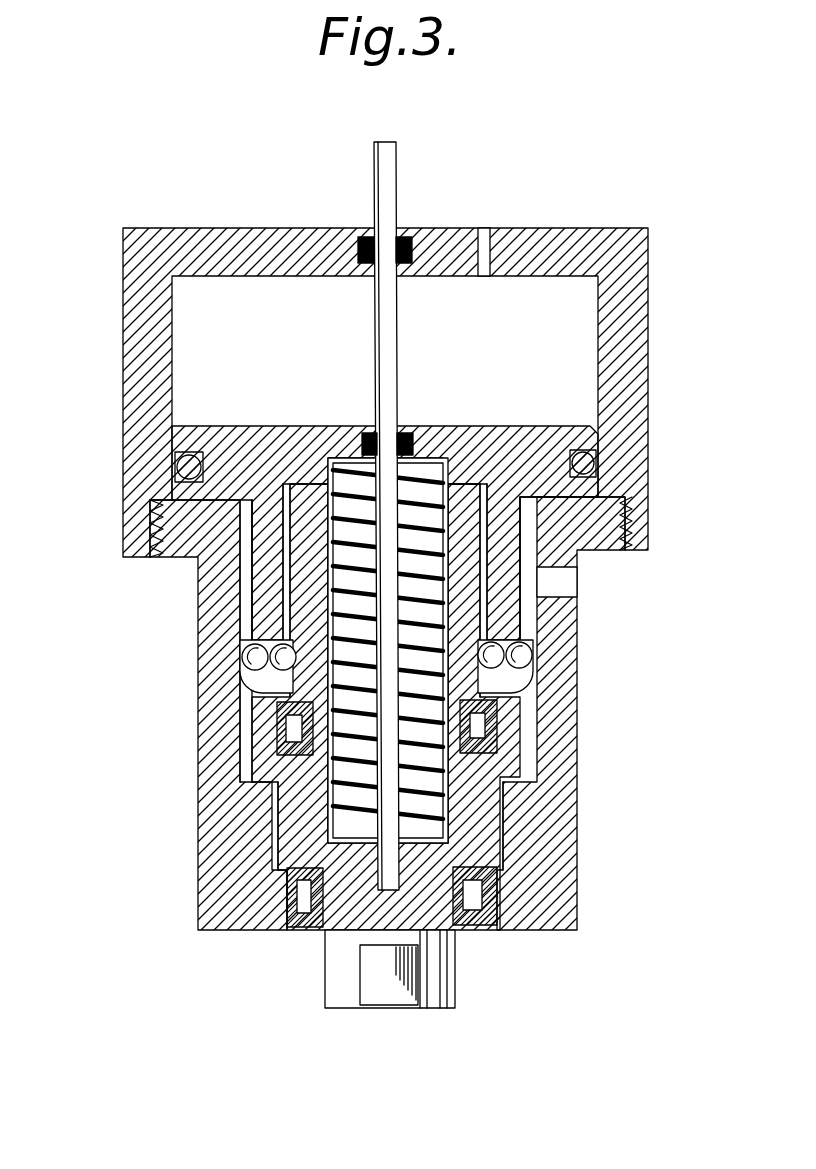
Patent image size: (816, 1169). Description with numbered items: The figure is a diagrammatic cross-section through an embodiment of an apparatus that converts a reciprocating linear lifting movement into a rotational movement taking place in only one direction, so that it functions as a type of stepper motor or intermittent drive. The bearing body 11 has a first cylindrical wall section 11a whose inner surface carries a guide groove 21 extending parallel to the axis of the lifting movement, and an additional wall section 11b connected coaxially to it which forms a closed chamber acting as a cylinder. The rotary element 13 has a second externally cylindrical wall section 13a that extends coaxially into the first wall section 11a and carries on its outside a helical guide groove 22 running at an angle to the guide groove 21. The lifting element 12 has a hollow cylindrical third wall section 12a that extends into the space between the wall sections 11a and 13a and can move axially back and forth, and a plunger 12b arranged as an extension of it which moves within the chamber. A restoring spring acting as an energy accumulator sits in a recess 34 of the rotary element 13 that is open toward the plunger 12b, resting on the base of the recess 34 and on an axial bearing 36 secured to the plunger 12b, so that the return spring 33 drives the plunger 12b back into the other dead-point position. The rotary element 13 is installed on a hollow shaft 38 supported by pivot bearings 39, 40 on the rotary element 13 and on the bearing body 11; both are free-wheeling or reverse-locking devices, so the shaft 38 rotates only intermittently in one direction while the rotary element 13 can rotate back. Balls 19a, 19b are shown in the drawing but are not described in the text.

The bearing body 11 is at (196, 883).
The first cylindrical wall section 11a is at (556, 826).
The additional wall section 11b is at (632, 278).
The lifting element 12 is at (241, 424).
The third wall section 12a is at (268, 613).
The plunger 12b is at (543, 440).
The rotary element 13 is at (290, 798).
The second externally cylindrical wall section 13a is at (300, 542).
The locking balls (left) 19a is at (236, 660).
The locking balls (right) 19b is at (538, 660).
The guide groove 21 is at (240, 532).
The helical guide groove 22 is at (470, 470).
The return spring 33 is at (465, 758).
The recess 34 is at (440, 608).
The axial bearing 36 is at (423, 455).
The hollow shaft 38 is at (361, 902).
The pivot bearing 39 is at (296, 700).
The pivot bearing 40 is at (495, 925).